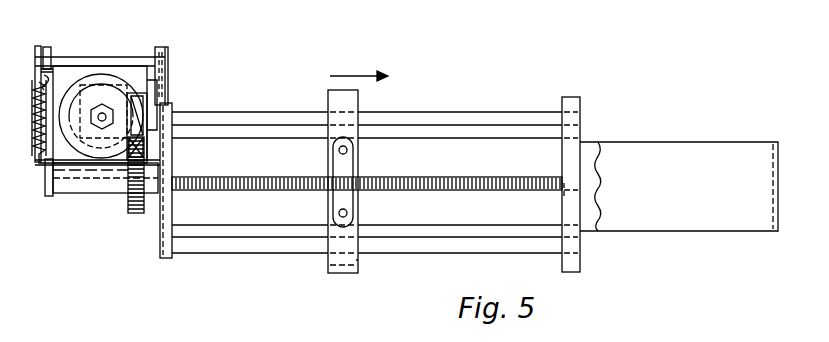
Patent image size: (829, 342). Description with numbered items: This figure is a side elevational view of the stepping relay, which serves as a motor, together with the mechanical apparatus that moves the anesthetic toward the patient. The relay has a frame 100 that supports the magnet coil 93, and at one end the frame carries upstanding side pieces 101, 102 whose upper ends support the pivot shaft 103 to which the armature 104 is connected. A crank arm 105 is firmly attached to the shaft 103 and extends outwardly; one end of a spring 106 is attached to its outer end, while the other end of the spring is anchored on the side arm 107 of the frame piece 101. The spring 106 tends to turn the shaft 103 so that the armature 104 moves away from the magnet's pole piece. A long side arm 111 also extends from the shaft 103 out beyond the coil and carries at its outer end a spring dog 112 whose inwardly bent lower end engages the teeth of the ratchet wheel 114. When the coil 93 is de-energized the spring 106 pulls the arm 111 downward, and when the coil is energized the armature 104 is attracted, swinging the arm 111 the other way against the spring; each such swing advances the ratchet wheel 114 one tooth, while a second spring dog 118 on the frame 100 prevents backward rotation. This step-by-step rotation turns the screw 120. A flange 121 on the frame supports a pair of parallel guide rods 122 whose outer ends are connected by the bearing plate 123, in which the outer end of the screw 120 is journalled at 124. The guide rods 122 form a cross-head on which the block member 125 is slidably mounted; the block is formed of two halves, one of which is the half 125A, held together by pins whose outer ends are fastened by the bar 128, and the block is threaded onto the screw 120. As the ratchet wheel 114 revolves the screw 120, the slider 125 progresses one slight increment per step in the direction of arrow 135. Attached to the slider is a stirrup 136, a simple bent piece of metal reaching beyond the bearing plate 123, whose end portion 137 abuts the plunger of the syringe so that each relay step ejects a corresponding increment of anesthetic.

The magnet coil 93 is at (92, 80).
The frame 100 is at (54, 200).
The side piece 101 is at (37, 52).
The side piece 102 is at (168, 52).
The pivot shaft 103 is at (103, 57).
The armature 104 is at (137, 76).
The crank arm 105 is at (48, 48).
The spring 106 is at (48, 82).
The side arm 107 is at (36, 163).
The long side arm 111 is at (162, 68).
The spring dog 112 is at (140, 128).
The ratchet wheel 114 is at (135, 213).
The spring dog 118 is at (136, 146).
The screw 120 is at (466, 177).
The flange 121 is at (164, 256).
The guide rods 122 is at (469, 112).
The bearing plate 123 is at (580, 134).
The journal 124 is at (562, 197).
The block member 125 is at (343, 280).
The block half 125A is at (357, 263).
The bar 128 is at (350, 212).
The arrow 135 is at (352, 74).
The stirrup 136 is at (693, 222).
The end portion 137 is at (780, 150).